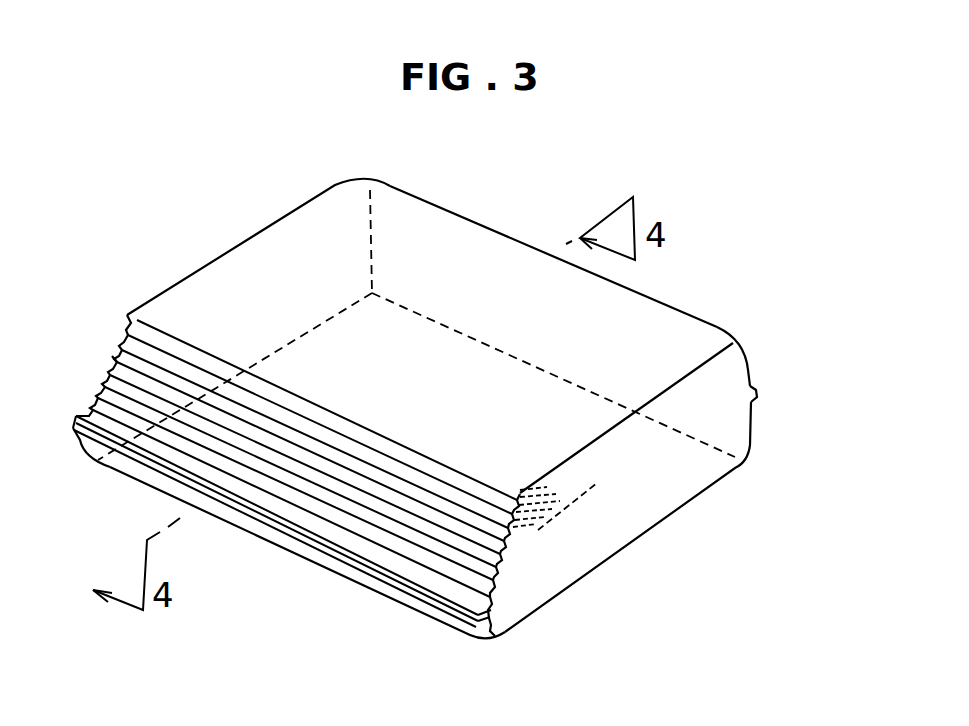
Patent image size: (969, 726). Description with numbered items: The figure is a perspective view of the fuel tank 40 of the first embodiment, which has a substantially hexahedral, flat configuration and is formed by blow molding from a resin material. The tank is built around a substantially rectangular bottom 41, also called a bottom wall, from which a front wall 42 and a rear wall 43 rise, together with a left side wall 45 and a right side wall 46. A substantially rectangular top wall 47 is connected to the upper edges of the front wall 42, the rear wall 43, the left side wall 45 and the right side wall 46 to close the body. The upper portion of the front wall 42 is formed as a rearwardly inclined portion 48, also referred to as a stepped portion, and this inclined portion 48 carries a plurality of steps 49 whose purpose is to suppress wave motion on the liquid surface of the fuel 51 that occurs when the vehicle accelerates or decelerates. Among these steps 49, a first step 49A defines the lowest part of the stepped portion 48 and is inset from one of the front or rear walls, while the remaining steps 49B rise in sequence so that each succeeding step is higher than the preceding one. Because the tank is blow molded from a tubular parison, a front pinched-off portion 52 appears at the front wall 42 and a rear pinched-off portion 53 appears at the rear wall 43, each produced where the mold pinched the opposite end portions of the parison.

The fuel tank 40 is at (200, 94).
The bottom 41 is at (680, 510).
The front wall 42 is at (84, 401).
The rear wall 43 is at (752, 428).
The left side wall 45 is at (617, 517).
The right side wall 46 is at (240, 245).
The top wall 47 is at (300, 250).
The inclined portion 48 is at (110, 358).
The steps 49 is at (322, 487).
The first step 49A is at (490, 590).
The remaining steps 49B is at (118, 350).
The fuel 51 is at (532, 527).
The front pinched-off portion 52 is at (310, 540).
The rear pinched-off portion 53 is at (758, 393).